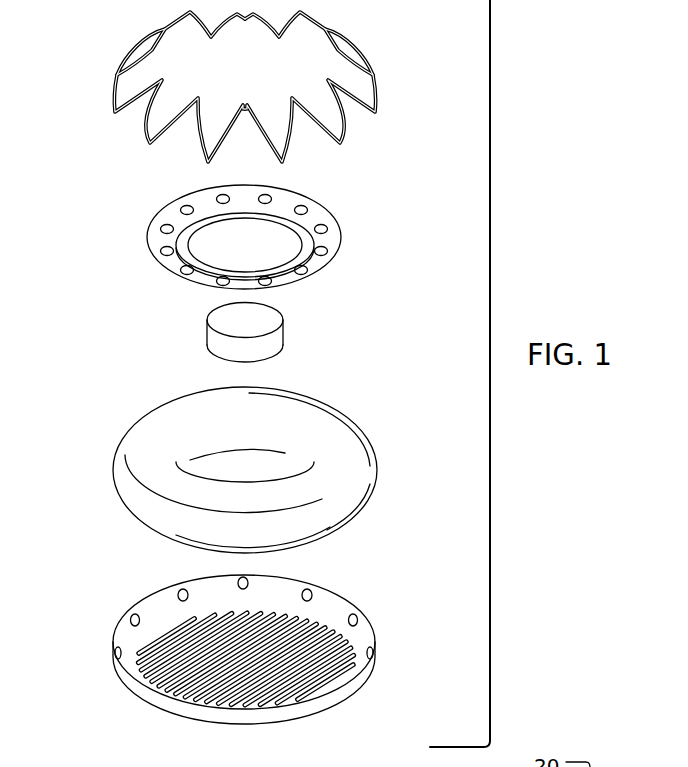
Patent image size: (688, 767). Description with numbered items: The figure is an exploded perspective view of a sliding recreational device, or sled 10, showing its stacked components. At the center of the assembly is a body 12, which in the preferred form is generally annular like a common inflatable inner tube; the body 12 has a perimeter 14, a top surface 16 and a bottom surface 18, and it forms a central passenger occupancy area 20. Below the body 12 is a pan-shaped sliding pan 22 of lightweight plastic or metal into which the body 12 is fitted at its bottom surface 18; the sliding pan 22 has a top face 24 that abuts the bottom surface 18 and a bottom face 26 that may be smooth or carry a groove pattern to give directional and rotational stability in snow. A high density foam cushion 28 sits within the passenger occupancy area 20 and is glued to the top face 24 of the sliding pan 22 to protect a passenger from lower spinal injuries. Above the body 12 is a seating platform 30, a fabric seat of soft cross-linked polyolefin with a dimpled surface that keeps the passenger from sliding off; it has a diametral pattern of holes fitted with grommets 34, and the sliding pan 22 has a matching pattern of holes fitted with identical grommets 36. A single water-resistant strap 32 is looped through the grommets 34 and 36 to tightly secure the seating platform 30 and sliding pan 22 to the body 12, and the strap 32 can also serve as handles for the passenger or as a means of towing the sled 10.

The sled 10 is at (78, 73).
The body 12 is at (372, 488).
The perimeter 14 is at (177, 510).
The top surface 16 is at (290, 420).
The bottom surface 18 is at (323, 533).
The passenger occupancy area 20 is at (268, 470).
The sliding pan 22 is at (333, 703).
The top face 24 is at (317, 628).
The bottom face 26 is at (148, 697).
The high density foam cushion 28 is at (213, 340).
The seating platform 30 is at (318, 208).
The strap 32 is at (373, 73).
The grommets 34 is at (182, 208).
The grommets 36 is at (131, 622).